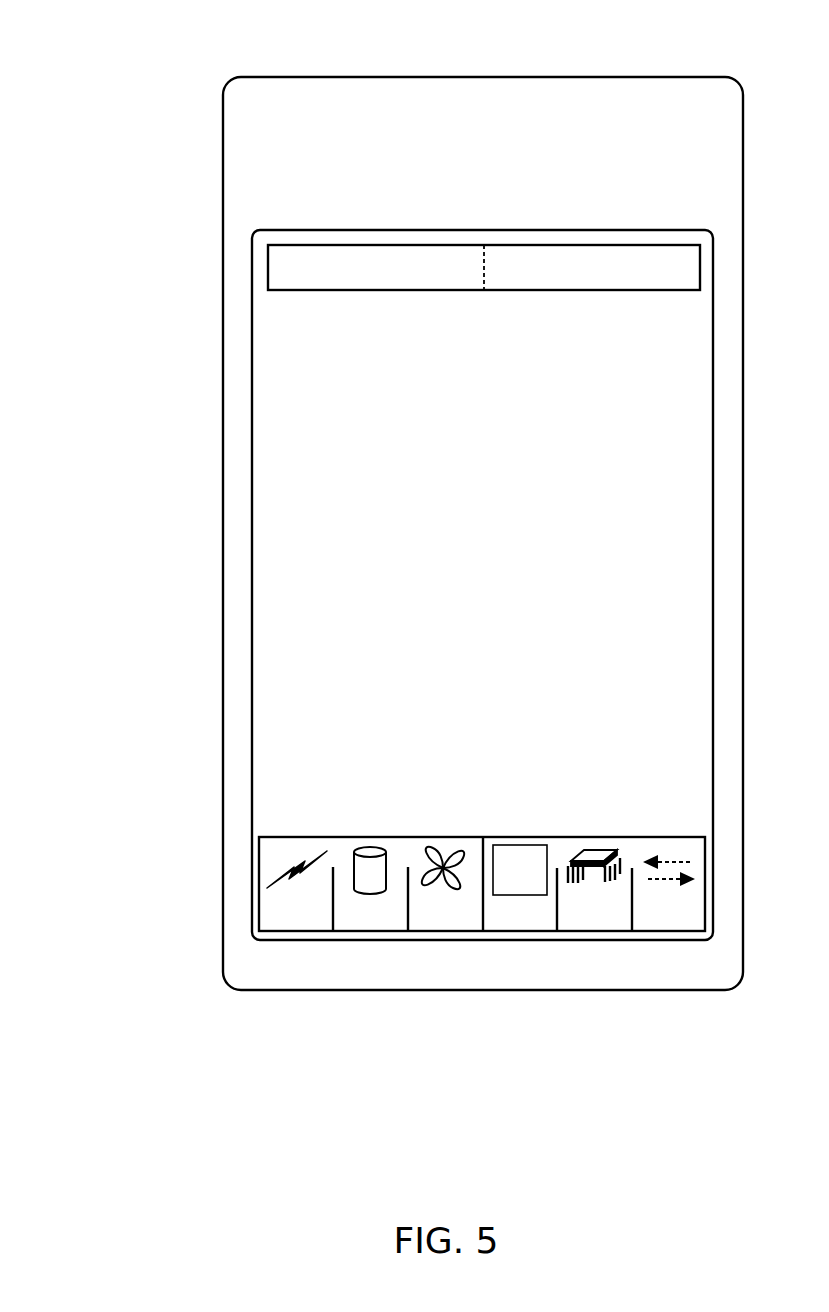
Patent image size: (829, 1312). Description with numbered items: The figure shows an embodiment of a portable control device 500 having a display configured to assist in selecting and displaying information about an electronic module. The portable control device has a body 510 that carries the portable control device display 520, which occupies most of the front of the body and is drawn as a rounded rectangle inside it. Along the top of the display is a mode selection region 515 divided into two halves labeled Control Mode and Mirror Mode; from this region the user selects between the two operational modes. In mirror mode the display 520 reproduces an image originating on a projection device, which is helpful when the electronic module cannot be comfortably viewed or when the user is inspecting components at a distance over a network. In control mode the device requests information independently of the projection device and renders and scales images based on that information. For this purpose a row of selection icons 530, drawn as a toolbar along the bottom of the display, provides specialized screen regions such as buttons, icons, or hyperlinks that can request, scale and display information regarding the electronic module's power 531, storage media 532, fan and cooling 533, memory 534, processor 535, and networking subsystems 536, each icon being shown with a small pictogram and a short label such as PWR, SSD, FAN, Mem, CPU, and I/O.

The portable control device 500 is at (152, 112).
The body 510 is at (483, 533).
The mode selector bar (Control Mode / Mirror Mode) 515 is at (408, 297).
The portable control device display 520 is at (482, 585).
The selection icons 530 is at (210, 828).
The electronic module power icon 531 is at (297, 830).
The storage media icon 532 is at (370, 830).
The fan and cooling icon 533 is at (445, 830).
The memory icon 534 is at (520, 830).
The processor icon 535 is at (590, 830).
The networking subsystems icon 536 is at (668, 830).